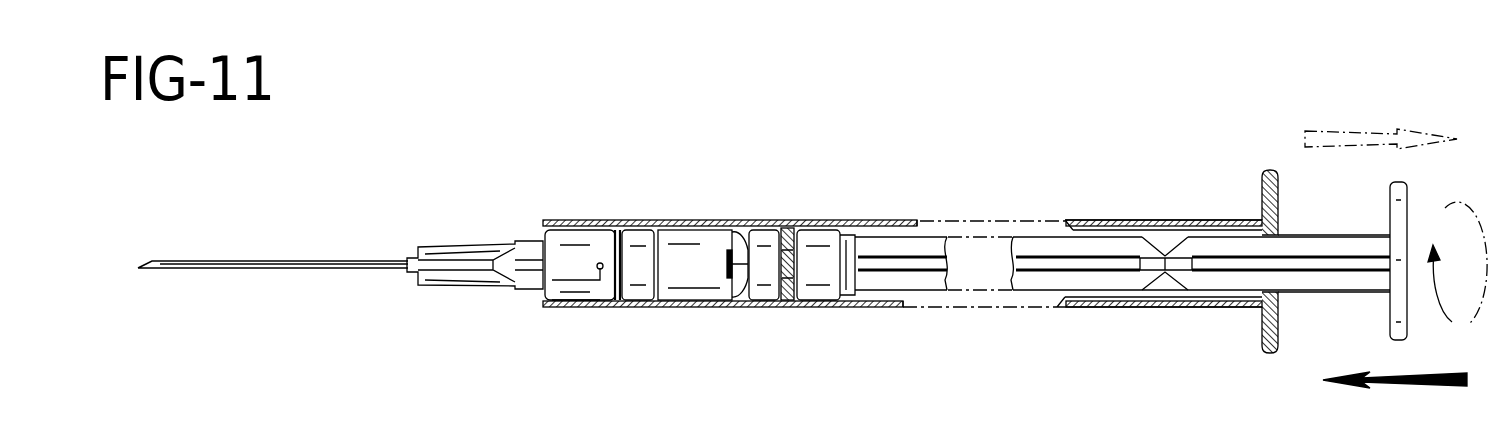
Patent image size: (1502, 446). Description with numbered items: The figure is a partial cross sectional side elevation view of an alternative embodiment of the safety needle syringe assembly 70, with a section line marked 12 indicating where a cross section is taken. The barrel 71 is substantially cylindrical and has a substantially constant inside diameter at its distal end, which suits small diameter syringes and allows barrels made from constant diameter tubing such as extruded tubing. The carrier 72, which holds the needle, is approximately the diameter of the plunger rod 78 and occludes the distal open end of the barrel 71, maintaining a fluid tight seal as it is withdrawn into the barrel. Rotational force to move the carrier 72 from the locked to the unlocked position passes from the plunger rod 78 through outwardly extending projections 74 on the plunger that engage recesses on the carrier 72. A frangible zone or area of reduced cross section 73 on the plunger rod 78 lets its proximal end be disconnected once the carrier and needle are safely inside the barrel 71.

The safety needle syringe assembly 70 is at (880, 184).
The barrel 71 is at (1128, 310).
The carrier 72 is at (573, 285).
The frangible zone or area of reduced cross section 73 is at (1160, 254).
The outwardly extending projections 74 is at (744, 226).
The plunger rod 78 is at (1025, 284).
The section line 12 is at (617, 168).